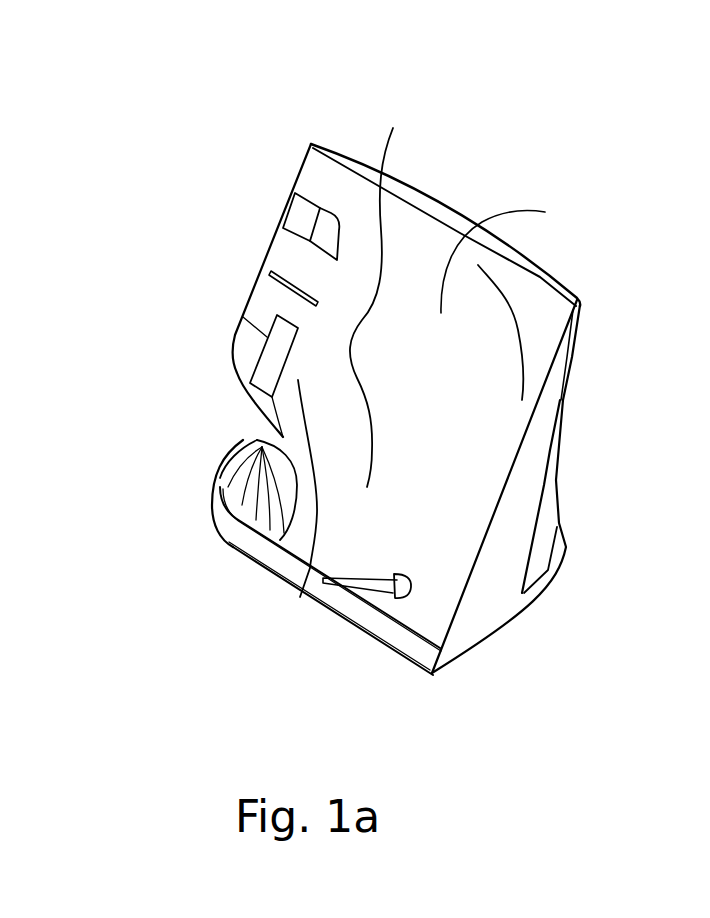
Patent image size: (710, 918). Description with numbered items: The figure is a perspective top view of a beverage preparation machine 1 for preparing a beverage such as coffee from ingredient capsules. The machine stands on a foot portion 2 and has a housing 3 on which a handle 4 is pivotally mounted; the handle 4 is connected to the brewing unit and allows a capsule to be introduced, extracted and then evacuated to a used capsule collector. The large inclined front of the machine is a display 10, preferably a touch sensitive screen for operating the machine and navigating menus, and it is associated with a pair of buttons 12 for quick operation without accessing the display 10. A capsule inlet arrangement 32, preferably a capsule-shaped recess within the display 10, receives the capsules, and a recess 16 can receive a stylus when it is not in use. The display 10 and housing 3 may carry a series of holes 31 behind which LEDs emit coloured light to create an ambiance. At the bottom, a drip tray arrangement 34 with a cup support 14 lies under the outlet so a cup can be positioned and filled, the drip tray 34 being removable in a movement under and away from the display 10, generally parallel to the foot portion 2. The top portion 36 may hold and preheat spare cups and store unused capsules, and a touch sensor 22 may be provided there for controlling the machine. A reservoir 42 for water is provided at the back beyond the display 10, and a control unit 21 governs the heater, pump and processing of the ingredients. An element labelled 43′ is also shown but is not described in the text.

The beverage preparation machine 1 is at (557, 133).
The foot portion 2 is at (422, 668).
The housing 3 is at (477, 612).
The handle 4 is at (275, 357).
The display 10 is at (407, 408).
The buttons 12 is at (265, 265).
The cup support 14 is at (240, 487).
The recess 16 is at (385, 597).
The control unit 21 is at (583, 323).
The touch sensor 22 is at (447, 217).
The holes 31 is at (623, 380).
The capsule inlet arrangement 32 is at (303, 217).
The drip tray arrangement 34 is at (243, 543).
The top portion 36 is at (537, 272).
The reservoir 42 is at (553, 507).
The connection element 43′ is at (257, 450).